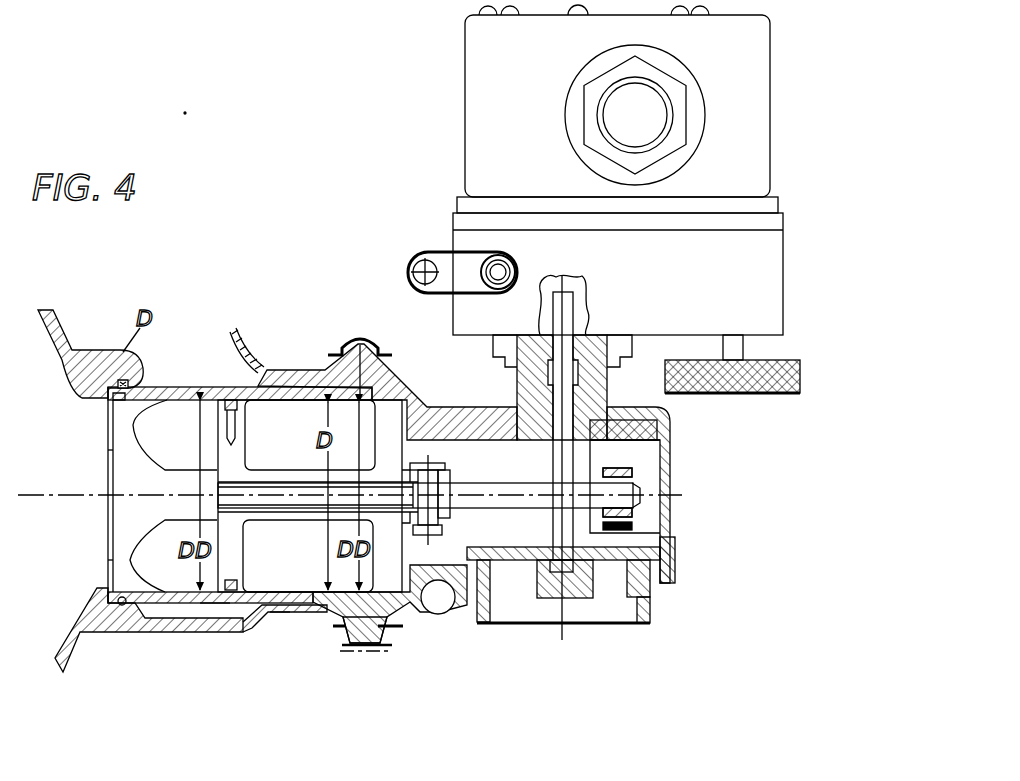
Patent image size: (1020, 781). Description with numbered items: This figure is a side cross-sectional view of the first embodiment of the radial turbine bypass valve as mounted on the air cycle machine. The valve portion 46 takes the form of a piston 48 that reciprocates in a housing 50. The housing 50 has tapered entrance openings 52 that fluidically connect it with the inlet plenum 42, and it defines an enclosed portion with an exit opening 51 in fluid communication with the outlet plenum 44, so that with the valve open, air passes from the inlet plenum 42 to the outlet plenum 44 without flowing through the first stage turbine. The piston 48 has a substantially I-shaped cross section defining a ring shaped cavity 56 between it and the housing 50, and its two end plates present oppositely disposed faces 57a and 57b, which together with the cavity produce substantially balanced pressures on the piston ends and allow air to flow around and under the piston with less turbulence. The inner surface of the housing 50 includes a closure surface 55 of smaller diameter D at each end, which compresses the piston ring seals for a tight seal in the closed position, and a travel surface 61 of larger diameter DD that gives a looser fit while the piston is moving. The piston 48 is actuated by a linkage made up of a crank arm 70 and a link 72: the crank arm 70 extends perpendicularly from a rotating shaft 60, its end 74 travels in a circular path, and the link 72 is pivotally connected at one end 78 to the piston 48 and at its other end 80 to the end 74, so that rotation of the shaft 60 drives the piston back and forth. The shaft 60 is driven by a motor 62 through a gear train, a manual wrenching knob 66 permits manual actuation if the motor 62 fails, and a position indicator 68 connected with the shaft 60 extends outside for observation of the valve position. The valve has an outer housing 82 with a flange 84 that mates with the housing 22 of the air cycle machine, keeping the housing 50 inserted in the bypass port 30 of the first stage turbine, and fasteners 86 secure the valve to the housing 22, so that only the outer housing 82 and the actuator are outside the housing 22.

The housing 22 is at (345, 627).
The bypass port 30 is at (160, 615).
The inlet plenum 42 is at (92, 348).
The outlet plenum 44 is at (60, 548).
The valve portion 46 is at (287, 622).
The piston 48 is at (230, 550).
The housing 50 is at (178, 395).
The exit opening 51 is at (70, 466).
The entrance openings 52 is at (150, 548).
The closure surface 55 is at (135, 398).
The ring shaped cavity 56 is at (297, 423).
The face 57a is at (213, 572).
The face 57b is at (445, 582).
The rotating shaft 60 is at (605, 545).
The travel surface 61 is at (283, 592).
The motor 62 is at (750, 168).
The manual wrenching knob 66 is at (730, 395).
The position indicator 68 is at (445, 262).
The crank arm 70 is at (640, 476).
The link 72 is at (497, 510).
The end 74 is at (628, 506).
The end 78 is at (447, 497).
The end 80 is at (636, 496).
The outer housing 82 is at (393, 373).
The flange 84 is at (352, 345).
The fasteners 86 is at (387, 652).